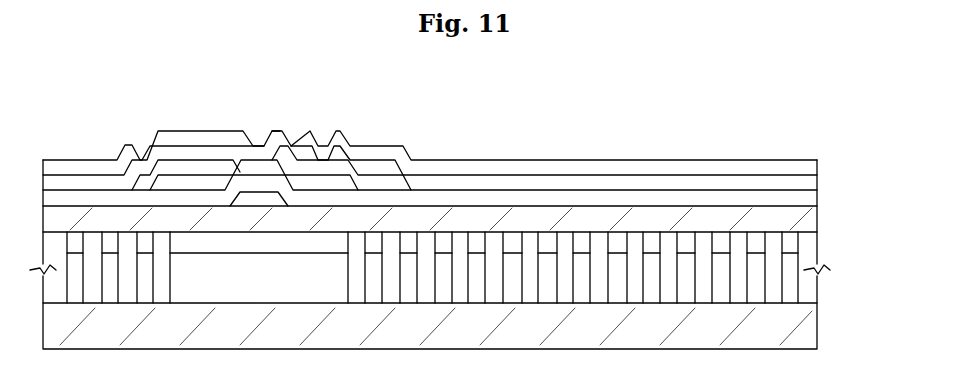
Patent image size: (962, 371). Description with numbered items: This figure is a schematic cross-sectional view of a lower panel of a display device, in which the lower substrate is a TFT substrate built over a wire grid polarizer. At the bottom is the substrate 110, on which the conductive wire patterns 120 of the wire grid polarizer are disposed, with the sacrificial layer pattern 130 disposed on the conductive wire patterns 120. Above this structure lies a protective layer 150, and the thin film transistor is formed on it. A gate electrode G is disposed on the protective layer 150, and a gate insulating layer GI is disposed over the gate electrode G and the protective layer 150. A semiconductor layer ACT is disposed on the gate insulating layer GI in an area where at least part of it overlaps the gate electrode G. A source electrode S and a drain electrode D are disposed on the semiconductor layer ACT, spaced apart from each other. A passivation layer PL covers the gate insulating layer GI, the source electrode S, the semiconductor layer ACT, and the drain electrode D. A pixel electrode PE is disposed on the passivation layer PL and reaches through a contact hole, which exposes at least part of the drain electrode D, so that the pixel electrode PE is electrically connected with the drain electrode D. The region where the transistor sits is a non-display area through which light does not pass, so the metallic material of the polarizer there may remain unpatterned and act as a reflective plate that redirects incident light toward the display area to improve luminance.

The substrate 110 is at (808, 325).
The conductive wire patterns 120 is at (793, 289).
The sacrificial layer pattern 130 is at (805, 245).
The protective layer 150 is at (808, 218).
The gate insulating layer GI is at (808, 198).
The gate electrode G is at (253, 202).
The semiconductor layer ACT is at (258, 168).
The source electrode S is at (190, 167).
The drain electrode D is at (317, 155).
The passivation layer PL is at (737, 183).
The pixel electrode PE is at (82, 172).